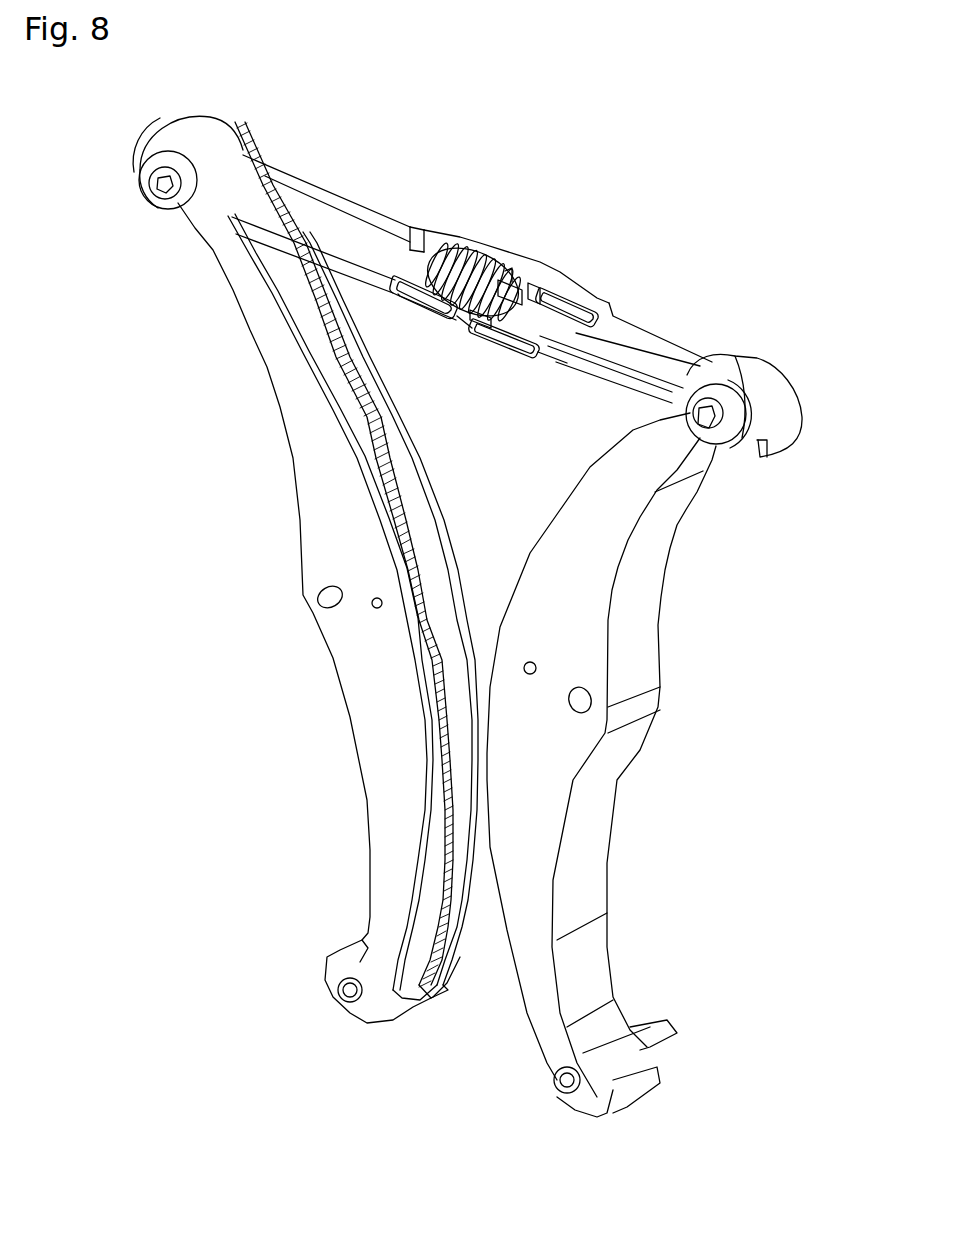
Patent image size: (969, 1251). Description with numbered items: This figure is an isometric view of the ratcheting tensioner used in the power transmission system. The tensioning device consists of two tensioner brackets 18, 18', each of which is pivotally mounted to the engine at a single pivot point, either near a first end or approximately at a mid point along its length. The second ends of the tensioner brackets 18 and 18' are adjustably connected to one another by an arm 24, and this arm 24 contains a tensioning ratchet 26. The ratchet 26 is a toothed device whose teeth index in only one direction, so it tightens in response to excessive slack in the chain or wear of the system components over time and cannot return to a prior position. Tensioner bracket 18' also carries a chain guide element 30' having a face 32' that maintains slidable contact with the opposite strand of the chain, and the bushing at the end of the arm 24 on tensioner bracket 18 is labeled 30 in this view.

The tensioner bracket 18 is at (639, 765).
The tensioner bracket 18' is at (319, 613).
The arm 24 is at (680, 310).
The tensioning ratchet 26 is at (503, 232).
The pivot bushing 30 is at (779, 401).
The chain guide element 30' is at (165, 158).
The face 32' is at (356, 608).